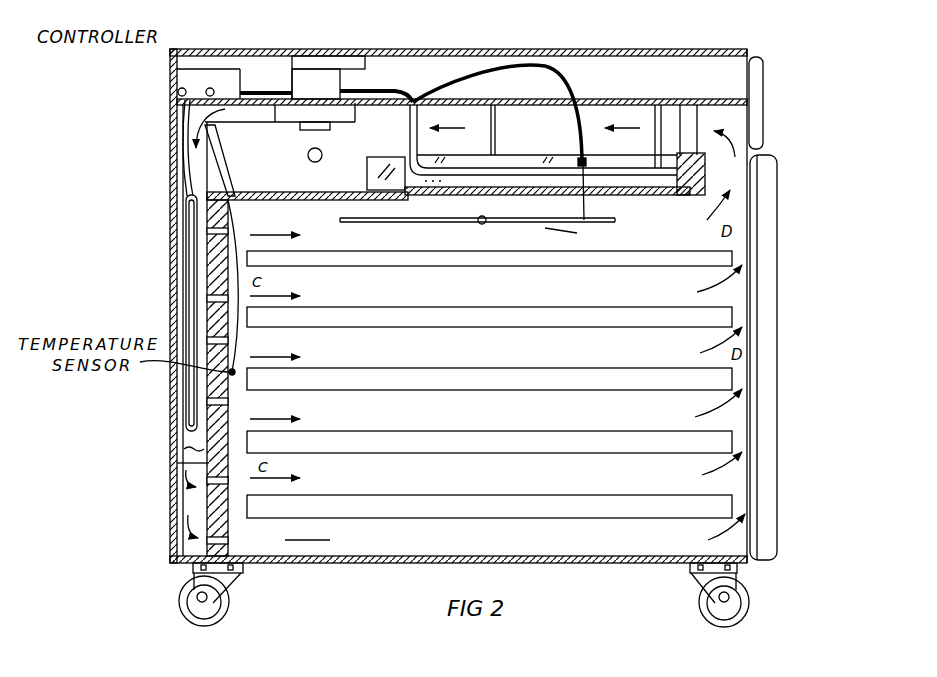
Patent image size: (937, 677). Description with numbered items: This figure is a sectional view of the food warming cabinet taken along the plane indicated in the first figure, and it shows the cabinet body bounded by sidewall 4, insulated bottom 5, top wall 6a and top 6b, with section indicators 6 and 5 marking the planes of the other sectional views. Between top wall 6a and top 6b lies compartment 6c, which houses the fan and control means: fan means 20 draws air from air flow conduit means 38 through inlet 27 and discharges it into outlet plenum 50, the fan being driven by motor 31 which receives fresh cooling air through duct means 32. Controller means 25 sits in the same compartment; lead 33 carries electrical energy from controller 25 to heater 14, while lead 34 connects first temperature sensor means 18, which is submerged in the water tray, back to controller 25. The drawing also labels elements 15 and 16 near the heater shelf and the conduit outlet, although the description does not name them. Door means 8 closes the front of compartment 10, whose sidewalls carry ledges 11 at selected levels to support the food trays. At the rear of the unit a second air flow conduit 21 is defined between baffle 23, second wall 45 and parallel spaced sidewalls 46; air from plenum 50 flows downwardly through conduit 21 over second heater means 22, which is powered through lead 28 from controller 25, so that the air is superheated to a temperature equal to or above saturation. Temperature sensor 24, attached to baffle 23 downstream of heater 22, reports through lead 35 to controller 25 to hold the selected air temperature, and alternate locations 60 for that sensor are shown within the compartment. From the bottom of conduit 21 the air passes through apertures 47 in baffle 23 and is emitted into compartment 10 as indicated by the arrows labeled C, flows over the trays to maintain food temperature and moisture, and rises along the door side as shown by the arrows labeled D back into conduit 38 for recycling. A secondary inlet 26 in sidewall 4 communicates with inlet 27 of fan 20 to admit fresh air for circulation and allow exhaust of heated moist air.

The sidewall 4 is at (177, 0).
The insulated bottom 5 is at (83, 113).
The section line 6- 6 is at (50, 73).
The top wall 6a is at (690, 104).
The top 6b is at (726, 49).
The compartment 6c is at (644, 88).
The door means 8 is at (775, 508).
The compartment 10 is at (610, 285).
The ledges 11 is at (510, 448).
The heater 14 is at (468, 163).
The heater shelf panel 15 is at (295, 194).
The duct outlet vanes 16 is at (685, 131).
The first temperature sensor means 18 is at (578, 158).
The fan means 20 is at (320, 142).
The second air flow conduit 21 is at (178, 258).
The second heater means 22 is at (195, 288).
The baffle 23 is at (228, 410).
The temperature sensor 24 is at (234, 370).
The controller means 25 is at (183, 75).
The secondary inlet 26 is at (320, 162).
The inlet 27 is at (305, 125).
The lead 28 is at (181, 162).
The motor 31 is at (345, 87).
The duct means 32 is at (317, 62).
The lead 33 is at (260, 90).
The lead 34 is at (420, 95).
The lead 35 is at (246, 160).
The air flow conduit means 38 is at (545, 135).
The second wall 45 is at (178, 397).
The sidewalls 46 is at (178, 456).
The apertures 47 is at (232, 562).
The outlet plenum 50 is at (260, 118).
The alternate locations 60 is at (617, 220).